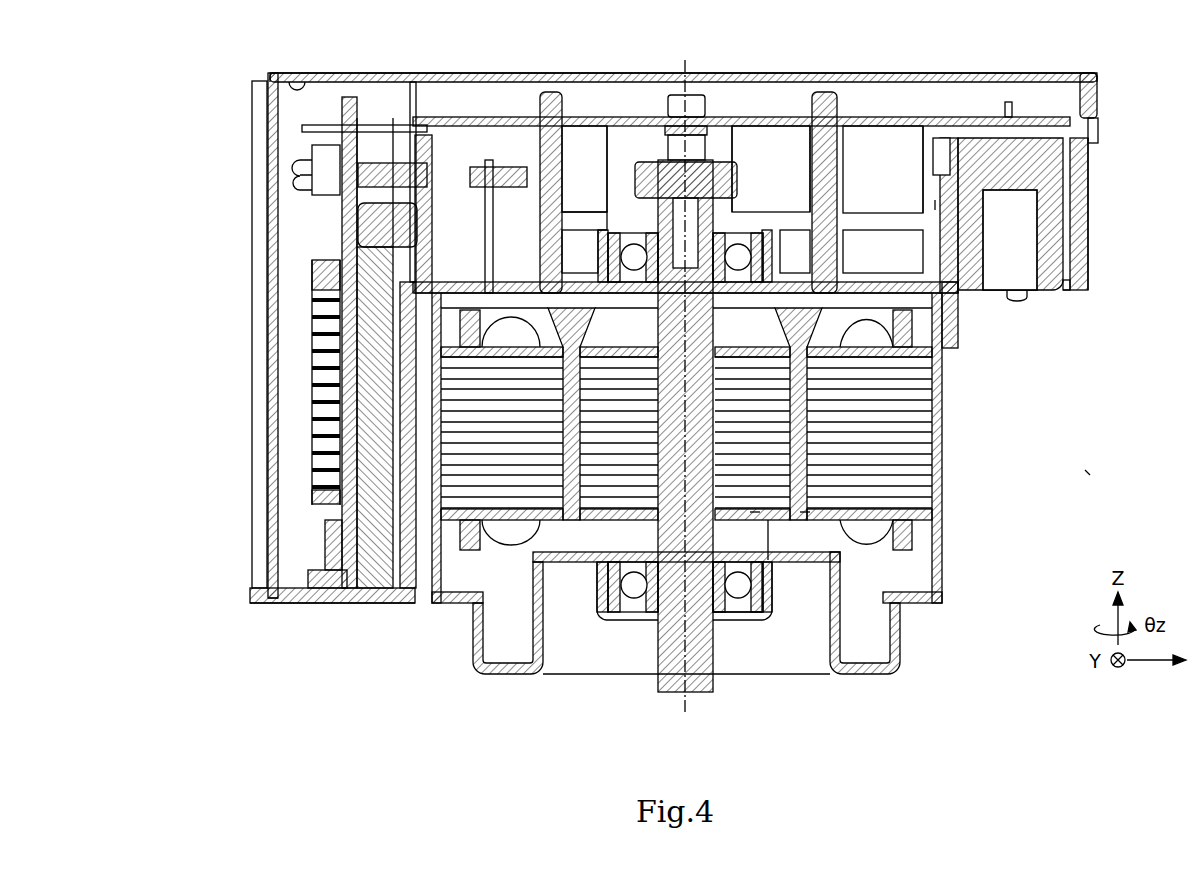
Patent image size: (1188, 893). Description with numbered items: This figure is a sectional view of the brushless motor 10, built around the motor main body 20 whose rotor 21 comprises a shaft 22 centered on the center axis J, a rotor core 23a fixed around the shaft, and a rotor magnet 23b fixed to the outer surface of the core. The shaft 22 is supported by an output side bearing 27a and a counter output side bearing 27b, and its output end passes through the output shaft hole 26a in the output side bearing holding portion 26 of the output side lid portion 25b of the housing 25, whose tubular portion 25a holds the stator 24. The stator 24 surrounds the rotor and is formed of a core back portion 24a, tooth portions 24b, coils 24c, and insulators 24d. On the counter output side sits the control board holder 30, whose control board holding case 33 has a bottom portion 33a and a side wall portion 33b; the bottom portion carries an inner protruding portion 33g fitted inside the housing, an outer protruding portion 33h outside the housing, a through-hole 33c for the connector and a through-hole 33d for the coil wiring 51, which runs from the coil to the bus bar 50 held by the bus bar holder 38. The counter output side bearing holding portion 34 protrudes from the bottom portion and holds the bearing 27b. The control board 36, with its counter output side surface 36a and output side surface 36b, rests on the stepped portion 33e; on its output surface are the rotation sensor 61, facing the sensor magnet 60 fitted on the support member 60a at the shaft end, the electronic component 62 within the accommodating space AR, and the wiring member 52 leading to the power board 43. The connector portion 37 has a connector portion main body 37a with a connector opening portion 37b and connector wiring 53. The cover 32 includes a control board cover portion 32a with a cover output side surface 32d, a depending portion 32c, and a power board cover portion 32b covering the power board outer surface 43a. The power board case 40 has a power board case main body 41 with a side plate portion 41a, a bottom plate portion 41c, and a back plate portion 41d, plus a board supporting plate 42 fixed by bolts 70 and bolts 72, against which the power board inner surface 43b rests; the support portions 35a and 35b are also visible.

The motor 10 is at (1085, 470).
The motor main body 20 is at (955, 455).
The rotor 21 is at (766, 560).
The shaft 22 is at (672, 688).
The rotor core 23a is at (753, 512).
The rotor magnet 23b is at (803, 520).
The stator 24 is at (912, 560).
The core back portion 24a is at (923, 415).
The tooth portions 24b is at (900, 397).
The coils 24c is at (912, 528).
The insulators 24d is at (910, 340).
The housing 25 is at (1015, 572).
The tubular portion 25a is at (940, 585).
The output side lid portion 25b is at (900, 635).
The output side bearing holding portion 26 is at (598, 592).
The output shaft hole 26a is at (735, 620).
The output side bearing 27a is at (634, 590).
The counter output side bearing 27b is at (740, 255).
The control board holder 30 is at (1098, 195).
The cover 32 is at (1076, 75).
The control board cover portion 32a is at (496, 73).
The power board cover portion 32b is at (262, 96).
The depending portion 32c is at (1076, 117).
The cover output side surface 32d is at (297, 82).
The control board holding case 33 is at (1093, 153).
The bottom portion 33a is at (950, 312).
The side wall portion 33b is at (1080, 218).
The through-hole 33c is at (1003, 298).
The through-hole 33d is at (492, 195).
The stepped portion 33e is at (1070, 118).
The inner protruding portion 33g is at (450, 300).
The outer protruding portion 33h is at (430, 330).
The counter output side bearing holding portion 34 is at (793, 126).
The support portion 35a is at (550, 92).
The support portion 35b is at (668, 110).
The control board 36 is at (866, 126).
The control board counter output side surface 36a is at (613, 120).
The control board output side surface 36b is at (750, 120).
The connector portion 37 is at (1048, 295).
The connector portion main body 37a is at (1030, 250).
The connector opening portion 37b is at (1045, 262).
The bus bar holder 38 is at (411, 117).
The power board case 40 is at (326, 614).
The power board case main body 41 is at (433, 680).
The side plate portion 41a is at (262, 258).
The bottom plate portion 41c is at (287, 596).
The back plate portion 41d is at (408, 575).
The board supporting plate 42 is at (377, 586).
The power board 43 is at (340, 108).
The power board outer surface 43a is at (325, 522).
The power board inner surface 43b is at (366, 566).
The bus bar 50 is at (438, 117).
The coil wiring 51 is at (463, 117).
The wiring member 52 is at (367, 118).
The connector wiring 53 is at (1012, 190).
The sensor magnet 60 is at (723, 117).
The support member 60a is at (672, 212).
The rotation sensor 61 is at (715, 113).
The electronic component 62 is at (613, 117).
The bolts 70 is at (430, 248).
The bolts 72 is at (410, 485).
The electronic component accommodating space AR is at (935, 200).
The center axis J is at (688, 695).